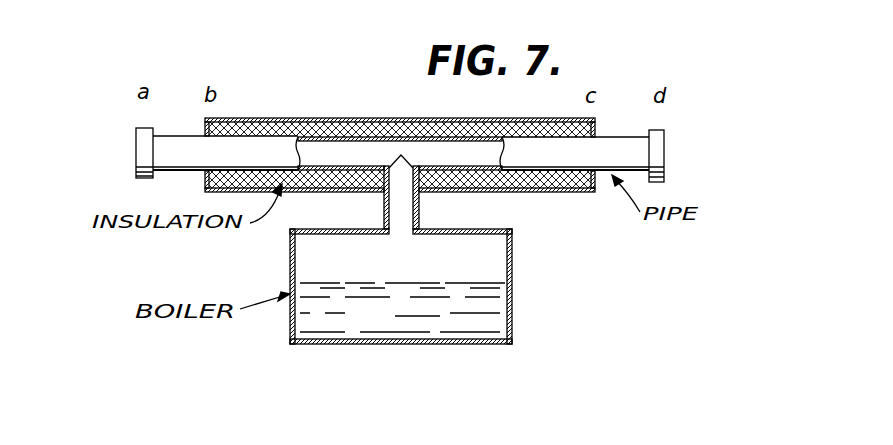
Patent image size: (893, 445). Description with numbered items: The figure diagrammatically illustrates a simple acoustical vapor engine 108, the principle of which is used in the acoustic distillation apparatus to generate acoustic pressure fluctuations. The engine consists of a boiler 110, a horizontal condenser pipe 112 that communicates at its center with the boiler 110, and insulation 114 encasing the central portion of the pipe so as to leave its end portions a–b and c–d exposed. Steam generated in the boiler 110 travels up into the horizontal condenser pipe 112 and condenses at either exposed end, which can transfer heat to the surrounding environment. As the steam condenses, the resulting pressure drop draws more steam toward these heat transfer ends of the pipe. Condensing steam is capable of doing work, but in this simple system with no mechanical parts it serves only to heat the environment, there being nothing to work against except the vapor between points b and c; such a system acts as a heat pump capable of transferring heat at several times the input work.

The acoustical vapor engine 108 is at (328, 102).
The boiler 110 is at (290, 335).
The horizontal condenser pipe 112 is at (163, 151).
The insulation 114 is at (403, 120).